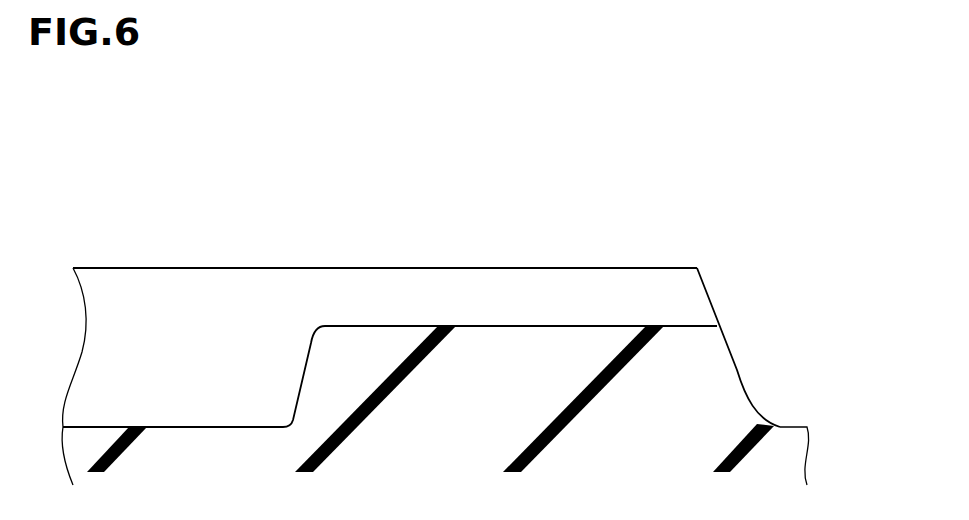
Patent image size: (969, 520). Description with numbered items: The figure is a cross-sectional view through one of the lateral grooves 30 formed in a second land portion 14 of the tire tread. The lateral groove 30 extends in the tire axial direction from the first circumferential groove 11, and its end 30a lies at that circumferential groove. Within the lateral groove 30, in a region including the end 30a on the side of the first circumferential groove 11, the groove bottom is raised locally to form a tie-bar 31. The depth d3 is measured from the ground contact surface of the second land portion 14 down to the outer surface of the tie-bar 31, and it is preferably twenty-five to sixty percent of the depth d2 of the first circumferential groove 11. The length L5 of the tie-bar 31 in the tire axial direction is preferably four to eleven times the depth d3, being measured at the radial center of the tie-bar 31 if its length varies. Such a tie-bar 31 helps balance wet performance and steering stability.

The second land portion 14 is at (141, 266).
The lateral groove 30 is at (222, 317).
The tie-bar 31 is at (569, 322).
The end of lateral groove 30a is at (712, 297).
The first circumferential groove 11 is at (768, 407).
The length of tie-bar L5 is at (736, 372).
The depth to outer surface of tie-bar d3 is at (476, 326).
The depth of first circumferential groove d2 is at (697, 268).